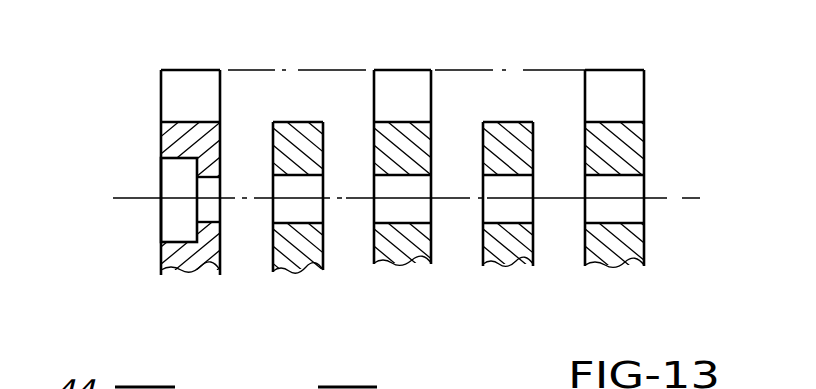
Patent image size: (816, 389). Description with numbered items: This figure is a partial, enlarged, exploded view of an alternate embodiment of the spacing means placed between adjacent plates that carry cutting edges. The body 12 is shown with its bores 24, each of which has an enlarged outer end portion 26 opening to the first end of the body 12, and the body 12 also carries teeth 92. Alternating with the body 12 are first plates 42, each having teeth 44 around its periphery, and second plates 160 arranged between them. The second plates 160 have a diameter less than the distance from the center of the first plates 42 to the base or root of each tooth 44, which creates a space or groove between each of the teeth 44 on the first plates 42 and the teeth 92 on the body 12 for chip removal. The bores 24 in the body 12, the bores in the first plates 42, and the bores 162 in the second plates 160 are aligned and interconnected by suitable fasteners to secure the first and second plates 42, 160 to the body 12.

The teeth 92 is at (139, 151).
The body 12 is at (154, 141).
The enlarged outer end portion 26 is at (103, 200).
The bores 24 is at (172, 245).
The second plates 160 is at (397, 139).
The teeth 44 is at (509, 139).
The first plates 42 is at (492, 260).
The bores 162 is at (469, 279).